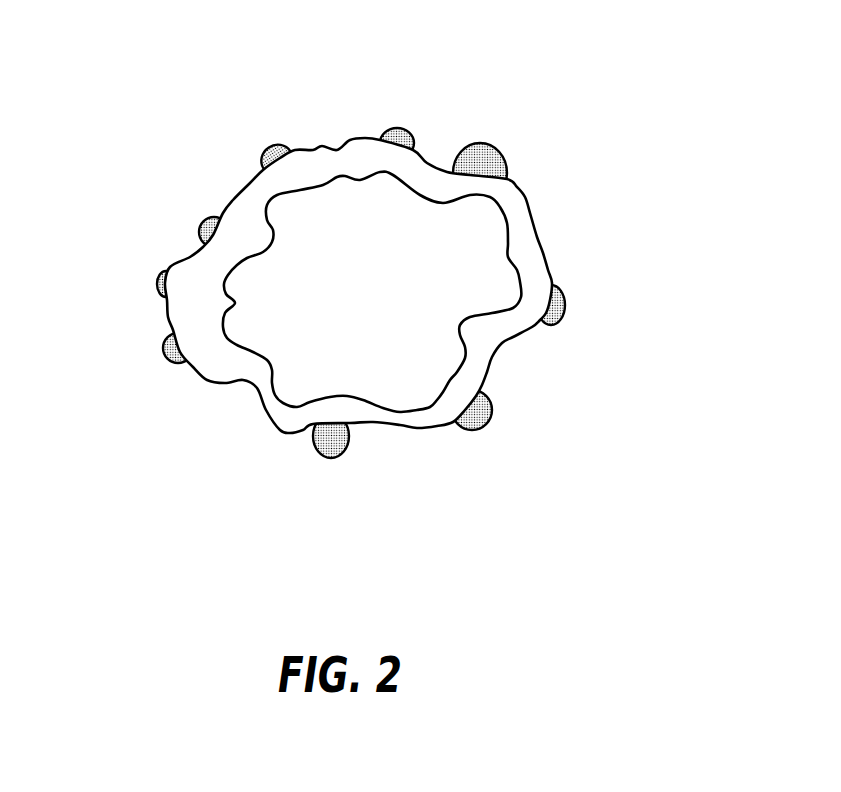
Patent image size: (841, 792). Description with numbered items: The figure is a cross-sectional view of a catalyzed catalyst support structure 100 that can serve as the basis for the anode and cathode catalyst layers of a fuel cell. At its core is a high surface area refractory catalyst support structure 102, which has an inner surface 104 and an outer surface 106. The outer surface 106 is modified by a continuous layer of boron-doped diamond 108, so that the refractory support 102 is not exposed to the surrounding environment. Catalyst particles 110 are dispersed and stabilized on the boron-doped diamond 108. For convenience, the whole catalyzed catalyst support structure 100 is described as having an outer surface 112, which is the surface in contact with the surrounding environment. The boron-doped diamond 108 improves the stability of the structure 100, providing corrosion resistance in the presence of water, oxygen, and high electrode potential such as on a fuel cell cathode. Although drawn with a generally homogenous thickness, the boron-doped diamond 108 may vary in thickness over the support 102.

The catalyzed catalyst support structure 100 is at (384, 264).
The refractory catalyst support structure 102 is at (386, 291).
The inner surface 104 is at (303, 358).
The outer surface 106 is at (226, 315).
The boron-doped diamond 108 is at (520, 237).
The catalyst particles 110 is at (408, 128).
The outer surface 112 is at (613, 260).